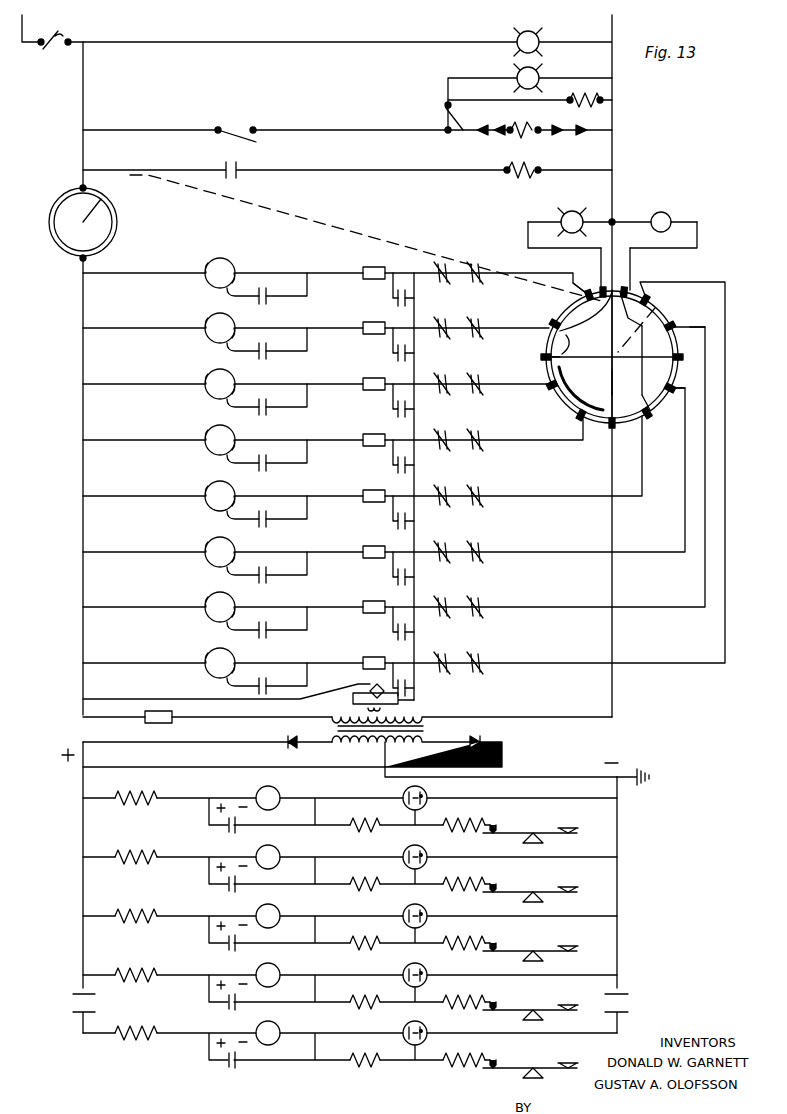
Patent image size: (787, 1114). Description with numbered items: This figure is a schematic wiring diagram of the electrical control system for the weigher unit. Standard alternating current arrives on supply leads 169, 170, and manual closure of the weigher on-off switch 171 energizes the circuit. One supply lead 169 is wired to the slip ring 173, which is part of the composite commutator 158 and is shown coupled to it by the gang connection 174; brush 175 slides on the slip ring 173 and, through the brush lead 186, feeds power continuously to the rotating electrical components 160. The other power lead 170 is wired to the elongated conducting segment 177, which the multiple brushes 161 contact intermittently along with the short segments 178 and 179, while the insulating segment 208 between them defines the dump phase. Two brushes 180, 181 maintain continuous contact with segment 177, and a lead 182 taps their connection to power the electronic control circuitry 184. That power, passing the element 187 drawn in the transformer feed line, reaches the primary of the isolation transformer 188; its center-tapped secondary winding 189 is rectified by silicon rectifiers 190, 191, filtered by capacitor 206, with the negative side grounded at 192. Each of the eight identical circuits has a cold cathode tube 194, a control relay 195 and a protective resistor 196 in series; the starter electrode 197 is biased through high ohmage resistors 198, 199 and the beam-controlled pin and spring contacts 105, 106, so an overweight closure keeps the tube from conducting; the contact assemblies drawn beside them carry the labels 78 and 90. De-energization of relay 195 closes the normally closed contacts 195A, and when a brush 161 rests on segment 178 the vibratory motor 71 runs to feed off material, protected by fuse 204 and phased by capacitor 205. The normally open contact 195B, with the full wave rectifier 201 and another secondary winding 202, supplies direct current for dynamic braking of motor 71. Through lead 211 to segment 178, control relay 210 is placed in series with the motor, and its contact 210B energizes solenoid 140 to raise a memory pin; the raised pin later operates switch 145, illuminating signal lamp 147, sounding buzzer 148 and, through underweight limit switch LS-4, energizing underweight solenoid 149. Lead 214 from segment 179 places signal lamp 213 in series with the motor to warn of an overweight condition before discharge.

The supply lead 169 is at (24, 29).
The weigher on-off switch 171 is at (56, 52).
The supply lead 170 is at (610, 23).
The signal lamp 147 is at (517, 78).
The buzzer 148 is at (598, 100).
The underweight limit switch LS-4 is at (244, 128).
The switch 145 is at (440, 119).
The underweight solenoid 149 is at (515, 133).
The normally open contact 210B is at (240, 168).
The solenoid 140 is at (520, 177).
The slip ring 173 is at (56, 243).
The brush 175 is at (82, 262).
The gang connection 174 is at (330, 224).
The signal lamp 213 is at (560, 216).
The control relay 210 is at (669, 214).
The lead 214 is at (528, 234).
The lead 211 is at (698, 249).
The vibratory motor 71 is at (205, 286).
The capacitor 205 is at (262, 287).
The fuse 204 is at (364, 267).
The normally open contact 195B is at (395, 298).
The normally closed contacts 195A is at (449, 288).
The rotating electrical components 160 is at (70, 483).
The brush lead 186 is at (80, 580).
The commutator 158 is at (666, 302).
The conducting segment 177 is at (674, 323).
The brush 181 is at (676, 361).
The conducting segment 178 is at (652, 411).
The conducting segment 179 is at (549, 330).
The brush 180 is at (548, 360).
The insulating segment 208 is at (562, 406).
The brushes 161 is at (579, 276).
The lead 182 is at (612, 392).
The full wave rectifier 201 is at (372, 681).
The resistor 187 is at (168, 720).
The secondary winding 202 is at (386, 712).
The silicon rectifier 190 is at (291, 737).
The isolation transformer 188 is at (348, 754).
The center-tapped secondary winding 189 is at (414, 746).
The silicon rectifier 191 is at (477, 740).
The ground 192 is at (640, 776).
The protective resistor 196 is at (156, 807).
The control relay 195 is at (259, 800).
The cold cathode tube 194 is at (429, 794).
The capacitor 206 is at (218, 826).
The high ohmage resistor 199 is at (345, 826).
The starter electrode 197 is at (413, 813).
The high ohmage resistor 198 is at (448, 829).
The pin contact 105 is at (530, 847).
The contact 78 is at (557, 822).
The spring-type contact 106 is at (497, 826).
The contact 90 is at (565, 834).
The electronic control circuitry 184 is at (632, 921).